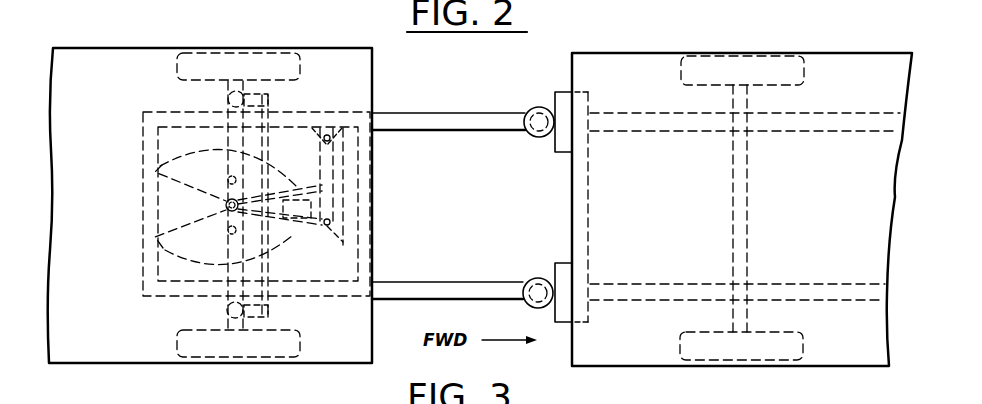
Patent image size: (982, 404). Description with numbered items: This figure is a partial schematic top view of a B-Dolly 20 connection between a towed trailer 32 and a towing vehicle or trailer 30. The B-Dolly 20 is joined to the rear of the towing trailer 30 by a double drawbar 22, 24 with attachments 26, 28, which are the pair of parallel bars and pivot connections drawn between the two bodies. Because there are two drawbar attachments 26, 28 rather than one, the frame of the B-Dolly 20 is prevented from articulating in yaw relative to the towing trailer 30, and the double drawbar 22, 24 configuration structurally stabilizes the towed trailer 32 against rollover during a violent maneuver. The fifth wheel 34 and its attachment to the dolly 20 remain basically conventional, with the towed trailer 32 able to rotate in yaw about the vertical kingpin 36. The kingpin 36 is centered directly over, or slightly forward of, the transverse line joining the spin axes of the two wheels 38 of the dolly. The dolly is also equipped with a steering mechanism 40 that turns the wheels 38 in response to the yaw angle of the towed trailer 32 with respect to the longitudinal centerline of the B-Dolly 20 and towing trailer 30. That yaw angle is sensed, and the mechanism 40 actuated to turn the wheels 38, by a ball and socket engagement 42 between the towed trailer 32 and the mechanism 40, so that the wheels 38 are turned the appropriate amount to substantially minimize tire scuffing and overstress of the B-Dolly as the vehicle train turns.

The B-Dolly 20 is at (325, 111).
The drawbar 22 is at (463, 117).
The drawbar 24 is at (487, 290).
The drawbar attachment 26 is at (537, 135).
The drawbar attachment 28 is at (535, 276).
The towing vehicle or trailer 30 is at (656, 53).
The towed trailer 32 is at (137, 49).
The fifth wheel 34 is at (158, 252).
The kingpin 36 is at (225, 204).
The wheels 38 is at (270, 62).
The steering mechanism 40 is at (384, 200).
The ball and socket engagement 42 is at (345, 243).